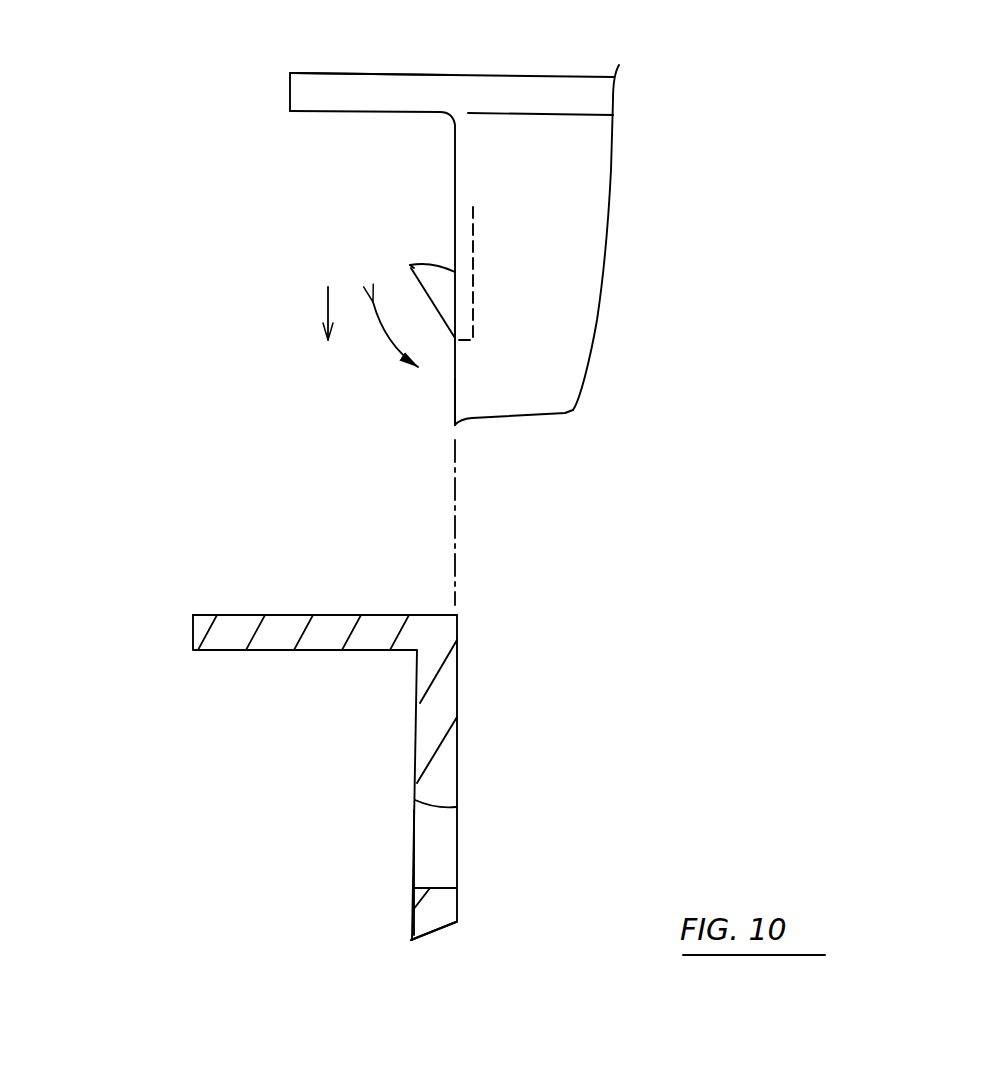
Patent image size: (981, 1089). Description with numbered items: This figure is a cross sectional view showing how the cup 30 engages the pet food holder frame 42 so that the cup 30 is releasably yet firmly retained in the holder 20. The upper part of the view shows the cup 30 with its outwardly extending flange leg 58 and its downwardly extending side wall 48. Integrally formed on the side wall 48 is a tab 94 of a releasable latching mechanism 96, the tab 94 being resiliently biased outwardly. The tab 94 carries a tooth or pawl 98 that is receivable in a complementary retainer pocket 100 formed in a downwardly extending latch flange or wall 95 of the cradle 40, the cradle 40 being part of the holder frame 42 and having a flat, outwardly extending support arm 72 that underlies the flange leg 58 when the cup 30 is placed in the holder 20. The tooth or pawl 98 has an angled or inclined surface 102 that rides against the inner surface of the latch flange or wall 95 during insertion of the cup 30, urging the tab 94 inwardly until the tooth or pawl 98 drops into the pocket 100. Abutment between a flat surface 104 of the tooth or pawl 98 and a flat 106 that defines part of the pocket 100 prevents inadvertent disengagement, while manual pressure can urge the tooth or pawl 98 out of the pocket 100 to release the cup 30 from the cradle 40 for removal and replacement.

The cup 30 is at (276, 84).
The flange leg 58 is at (350, 35).
The releasable latching mechanism 96 is at (512, 253).
The tooth or pawl 98 is at (433, 287).
The tab 94 is at (412, 277).
The flat surface 104 is at (430, 262).
The angled or inclined surface 102 is at (432, 312).
The side wall 48 is at (455, 402).
The cradle 40 is at (549, 523).
The holder 20 is at (223, 660).
The holder frame 42 is at (185, 632).
The support arm 72 is at (243, 614).
The flat 106 is at (430, 806).
The retainer pocket 100 is at (392, 838).
The latch flange or wall 95 is at (458, 916).